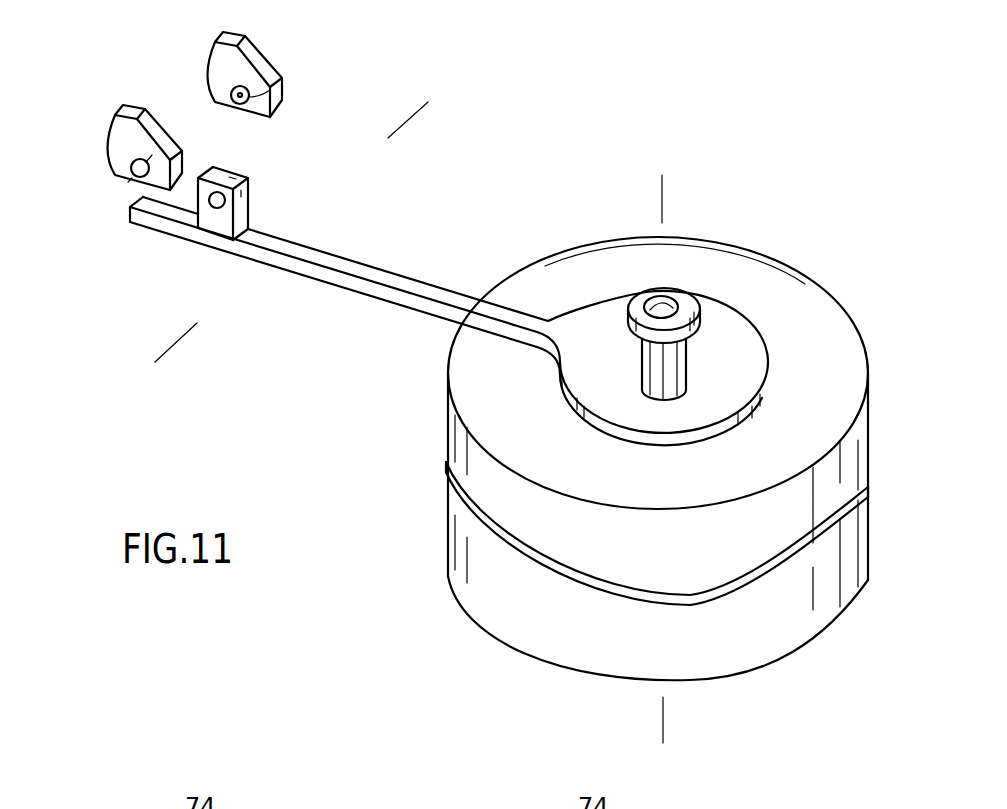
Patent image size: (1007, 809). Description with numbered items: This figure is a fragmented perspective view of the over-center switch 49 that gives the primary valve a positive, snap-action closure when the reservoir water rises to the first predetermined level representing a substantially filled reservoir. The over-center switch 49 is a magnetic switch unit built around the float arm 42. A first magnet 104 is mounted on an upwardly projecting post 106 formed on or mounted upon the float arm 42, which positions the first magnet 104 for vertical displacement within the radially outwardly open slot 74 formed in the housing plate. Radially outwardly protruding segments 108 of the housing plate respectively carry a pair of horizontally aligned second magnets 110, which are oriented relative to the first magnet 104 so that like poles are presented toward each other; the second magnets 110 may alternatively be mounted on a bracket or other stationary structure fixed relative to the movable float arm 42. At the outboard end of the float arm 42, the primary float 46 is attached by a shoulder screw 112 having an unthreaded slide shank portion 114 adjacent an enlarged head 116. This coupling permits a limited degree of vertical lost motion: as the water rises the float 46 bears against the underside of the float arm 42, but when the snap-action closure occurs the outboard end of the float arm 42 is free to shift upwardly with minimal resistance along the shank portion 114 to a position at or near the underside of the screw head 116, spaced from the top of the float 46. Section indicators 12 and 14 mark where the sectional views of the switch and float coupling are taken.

The section line 12- 12 is at (415, 125).
The section line 14- 14 is at (652, 200).
The float arm 42 is at (363, 297).
The primary float 46 is at (798, 587).
The over-center switch 49 is at (128, 250).
The radially outwardly open slot 74 is at (165, 80).
The first magnet 104 is at (217, 207).
The upwardly projecting post 106 is at (240, 205).
The radially outwardly protruding segments 108 is at (255, 56).
The second magnets 110 is at (282, 91).
The shoulder screw 112 is at (672, 280).
The slide shank portion 114 is at (685, 365).
The enlarged head 116 is at (692, 326).